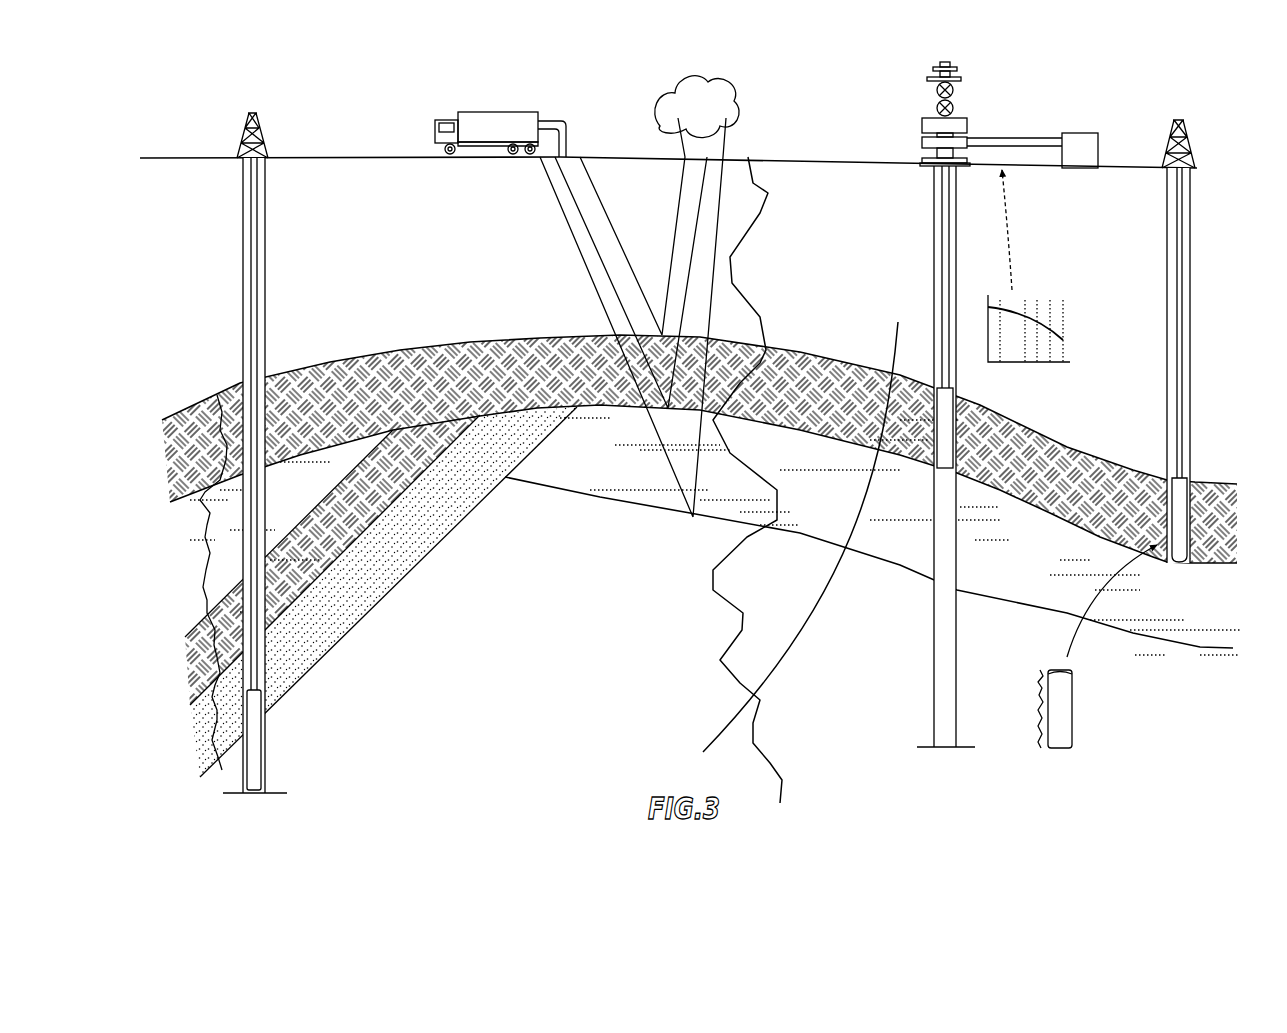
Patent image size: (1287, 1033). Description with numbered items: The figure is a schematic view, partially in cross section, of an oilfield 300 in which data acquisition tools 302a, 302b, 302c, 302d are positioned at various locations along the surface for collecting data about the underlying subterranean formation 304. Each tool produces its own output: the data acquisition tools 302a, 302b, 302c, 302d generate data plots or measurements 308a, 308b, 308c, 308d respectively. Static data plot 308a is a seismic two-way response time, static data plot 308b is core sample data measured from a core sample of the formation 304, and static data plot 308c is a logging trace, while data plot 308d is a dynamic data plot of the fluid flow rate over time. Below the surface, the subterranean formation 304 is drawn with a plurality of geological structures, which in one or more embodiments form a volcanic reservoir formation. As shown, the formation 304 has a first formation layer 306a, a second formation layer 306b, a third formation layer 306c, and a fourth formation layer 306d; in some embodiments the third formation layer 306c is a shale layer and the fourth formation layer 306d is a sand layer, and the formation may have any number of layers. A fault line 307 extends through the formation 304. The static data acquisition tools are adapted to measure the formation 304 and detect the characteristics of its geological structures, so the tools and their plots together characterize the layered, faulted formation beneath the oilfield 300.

The oilfield 300 is at (1124, 116).
The data acquisition tool 302a is at (462, 110).
The data acquisition tool 302b is at (1188, 508).
The data acquisition tool 302c is at (267, 745).
The data acquisition tool 302d is at (955, 462).
The subterranean formation 304 is at (570, 598).
The first formation layer 306a is at (390, 401).
The second formation layer 306b is at (630, 471).
The third formation layer 306c is at (381, 515).
The fourth formation layer 306d is at (414, 565).
The fault line 307 is at (896, 320).
The static data plot 308a is at (742, 626).
The static data plot 308b is at (1037, 680).
The static data plot 308c is at (205, 578).
The dynamic data plot 308d is at (1037, 363).